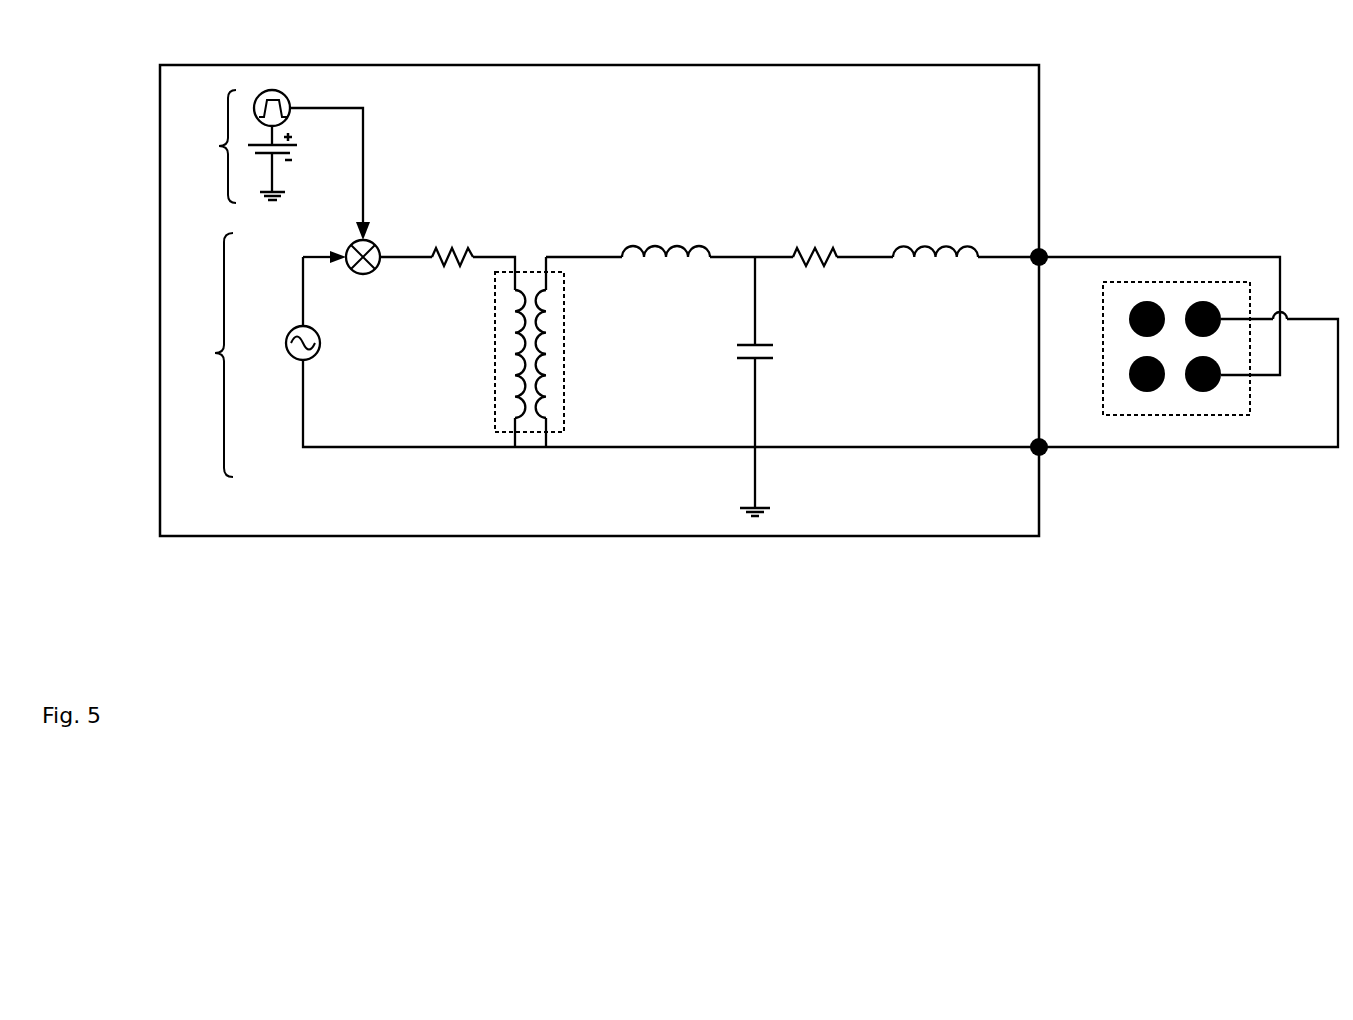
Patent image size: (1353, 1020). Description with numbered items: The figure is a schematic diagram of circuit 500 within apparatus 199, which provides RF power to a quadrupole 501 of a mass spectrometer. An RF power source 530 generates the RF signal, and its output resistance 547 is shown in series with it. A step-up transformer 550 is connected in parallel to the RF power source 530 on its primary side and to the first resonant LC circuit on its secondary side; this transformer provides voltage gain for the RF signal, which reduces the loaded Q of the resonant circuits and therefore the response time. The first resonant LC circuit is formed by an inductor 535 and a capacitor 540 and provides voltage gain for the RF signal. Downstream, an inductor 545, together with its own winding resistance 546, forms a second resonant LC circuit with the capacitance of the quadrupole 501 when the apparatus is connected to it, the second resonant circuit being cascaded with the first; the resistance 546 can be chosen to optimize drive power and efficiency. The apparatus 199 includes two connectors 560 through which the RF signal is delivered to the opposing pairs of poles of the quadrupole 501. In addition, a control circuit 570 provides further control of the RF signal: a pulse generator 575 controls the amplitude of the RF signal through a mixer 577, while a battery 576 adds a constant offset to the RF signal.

The apparatus 199 is at (599, 300).
The pulse generator 575 is at (260, 95).
The battery 576 is at (296, 143).
The circuit 570 is at (205, 146).
The mixer 577 is at (348, 248).
The RF power source 530 is at (294, 330).
The circuit 500 is at (202, 355).
The resistance 547 is at (462, 250).
The step-up transformer 550 is at (498, 364).
The inductor 535 is at (650, 250).
The capacitor 540 is at (742, 343).
The resistance 546 is at (795, 254).
The inductor 545 is at (925, 250).
The connectors 560 is at (1035, 440).
The quadrupole 501 is at (1102, 312).